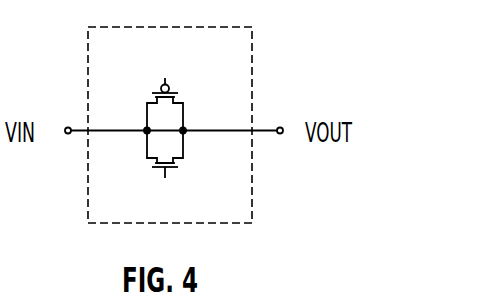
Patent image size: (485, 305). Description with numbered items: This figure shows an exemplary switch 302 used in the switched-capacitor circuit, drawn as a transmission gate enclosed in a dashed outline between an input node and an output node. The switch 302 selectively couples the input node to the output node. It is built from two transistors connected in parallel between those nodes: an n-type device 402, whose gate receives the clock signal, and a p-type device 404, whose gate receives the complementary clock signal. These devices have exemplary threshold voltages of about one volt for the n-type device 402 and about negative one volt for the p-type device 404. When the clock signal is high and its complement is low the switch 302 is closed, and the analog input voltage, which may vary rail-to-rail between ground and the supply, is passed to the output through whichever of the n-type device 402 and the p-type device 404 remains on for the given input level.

The switch 302 is at (130, 27).
The p-type device 404 is at (180, 90).
The n-type device 402 is at (183, 165).